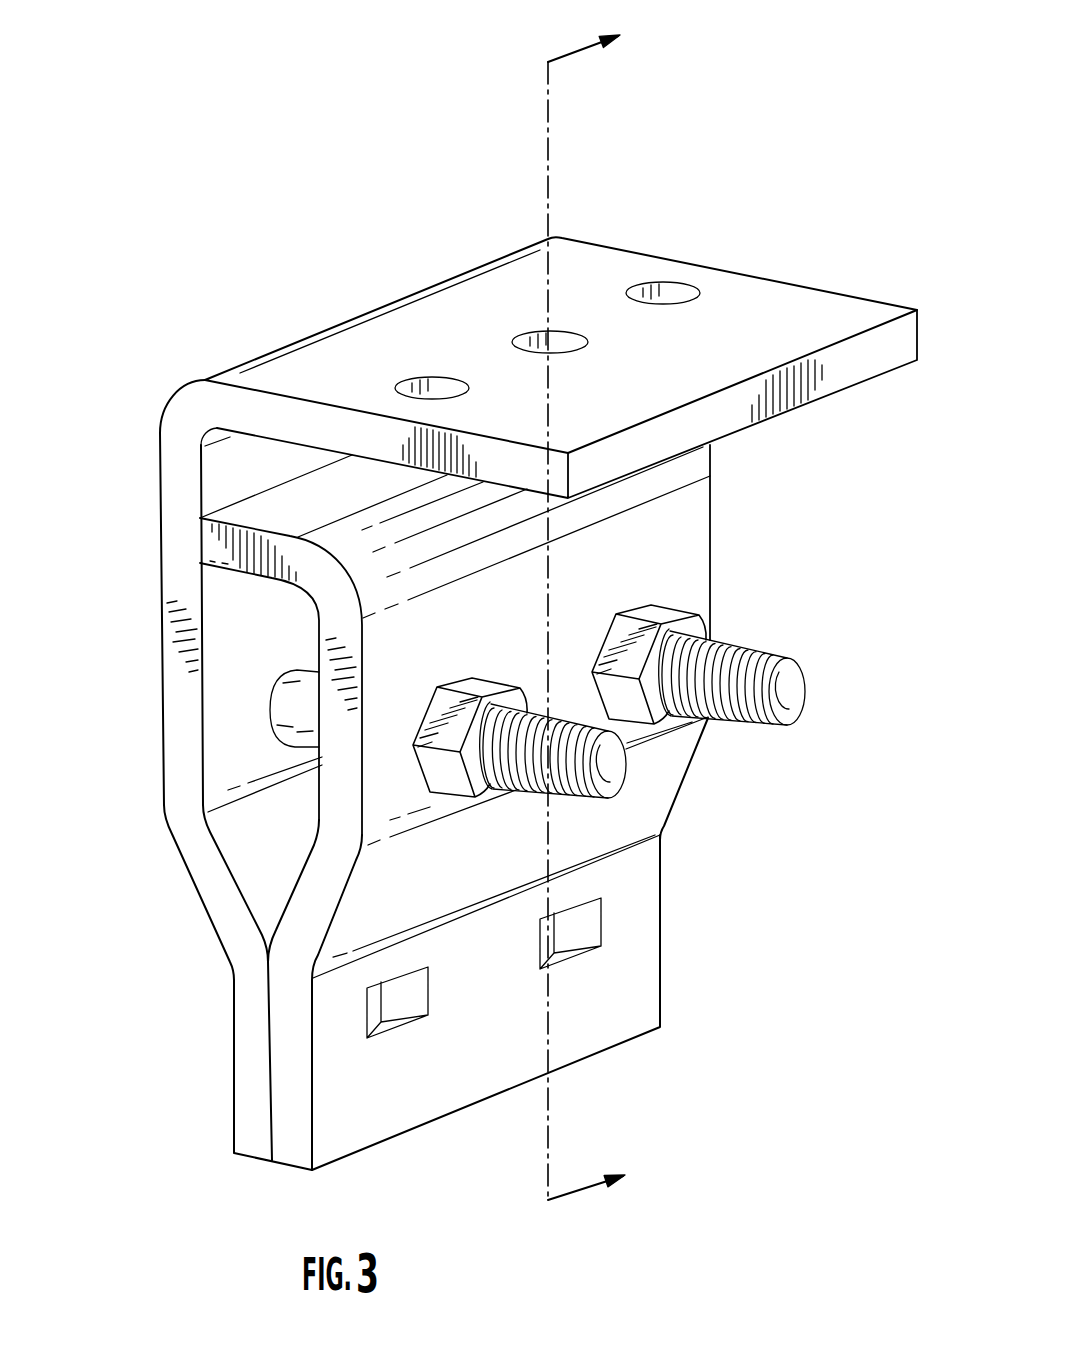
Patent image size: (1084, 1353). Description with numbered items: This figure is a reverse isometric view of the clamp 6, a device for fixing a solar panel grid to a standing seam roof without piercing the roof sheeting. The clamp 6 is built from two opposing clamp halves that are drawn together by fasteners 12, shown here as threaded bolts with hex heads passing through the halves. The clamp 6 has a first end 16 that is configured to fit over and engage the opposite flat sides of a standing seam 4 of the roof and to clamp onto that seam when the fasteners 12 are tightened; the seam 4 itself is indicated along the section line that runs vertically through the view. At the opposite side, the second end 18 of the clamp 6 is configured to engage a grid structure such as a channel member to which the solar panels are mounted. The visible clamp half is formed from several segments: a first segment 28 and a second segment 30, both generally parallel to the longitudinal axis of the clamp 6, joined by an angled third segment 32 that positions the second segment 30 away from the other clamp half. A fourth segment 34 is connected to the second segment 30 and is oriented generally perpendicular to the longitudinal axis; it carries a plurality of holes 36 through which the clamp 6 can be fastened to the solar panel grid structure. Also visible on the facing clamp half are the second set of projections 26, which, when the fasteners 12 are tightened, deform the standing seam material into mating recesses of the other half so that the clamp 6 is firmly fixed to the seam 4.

The standing seam 4 is at (597, 603).
The clamp 6 is at (128, 367).
The fasteners 12 is at (607, 774).
The first end 16 is at (223, 830).
The second end 18 is at (509, 642).
The second set of projections 26 is at (405, 998).
The first segment 28 is at (252, 1048).
The second segment 30 is at (176, 669).
The third segment 32 is at (214, 868).
The fourth segment 34 is at (818, 315).
The holes 36 is at (660, 289).